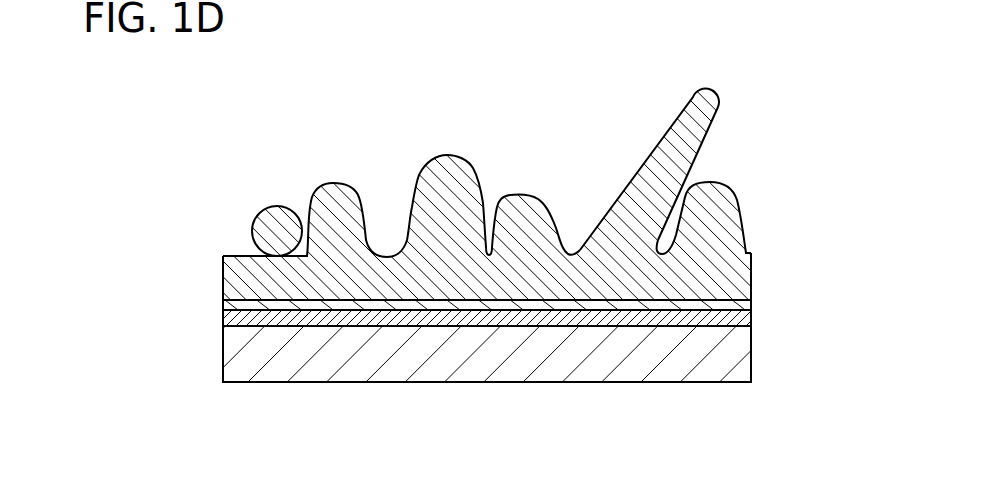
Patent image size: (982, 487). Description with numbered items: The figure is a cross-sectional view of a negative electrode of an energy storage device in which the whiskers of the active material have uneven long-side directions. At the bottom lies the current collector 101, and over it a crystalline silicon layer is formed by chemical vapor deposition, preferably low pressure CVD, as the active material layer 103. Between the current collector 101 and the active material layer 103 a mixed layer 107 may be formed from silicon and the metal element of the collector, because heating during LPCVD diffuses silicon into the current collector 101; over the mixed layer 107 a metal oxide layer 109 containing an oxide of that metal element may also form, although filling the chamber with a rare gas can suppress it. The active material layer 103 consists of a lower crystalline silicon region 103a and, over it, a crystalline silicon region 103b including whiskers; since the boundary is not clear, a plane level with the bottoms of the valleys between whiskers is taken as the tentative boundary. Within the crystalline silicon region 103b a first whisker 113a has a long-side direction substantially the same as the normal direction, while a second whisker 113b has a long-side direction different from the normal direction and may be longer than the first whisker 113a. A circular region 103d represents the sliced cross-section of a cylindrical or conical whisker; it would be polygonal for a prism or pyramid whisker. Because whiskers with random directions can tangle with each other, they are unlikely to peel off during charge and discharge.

The current collector 101 is at (380, 351).
The active material layer 103 is at (212, 157).
The crystalline silicon region 103a is at (767, 256).
The crystalline silicon region including a whisker 103b is at (537, 160).
The region 103d is at (278, 223).
The mixed layer 107 is at (533, 312).
The metal oxide layer 109 is at (582, 300).
The first whisker 113a is at (455, 192).
The second whisker 113b is at (682, 128).